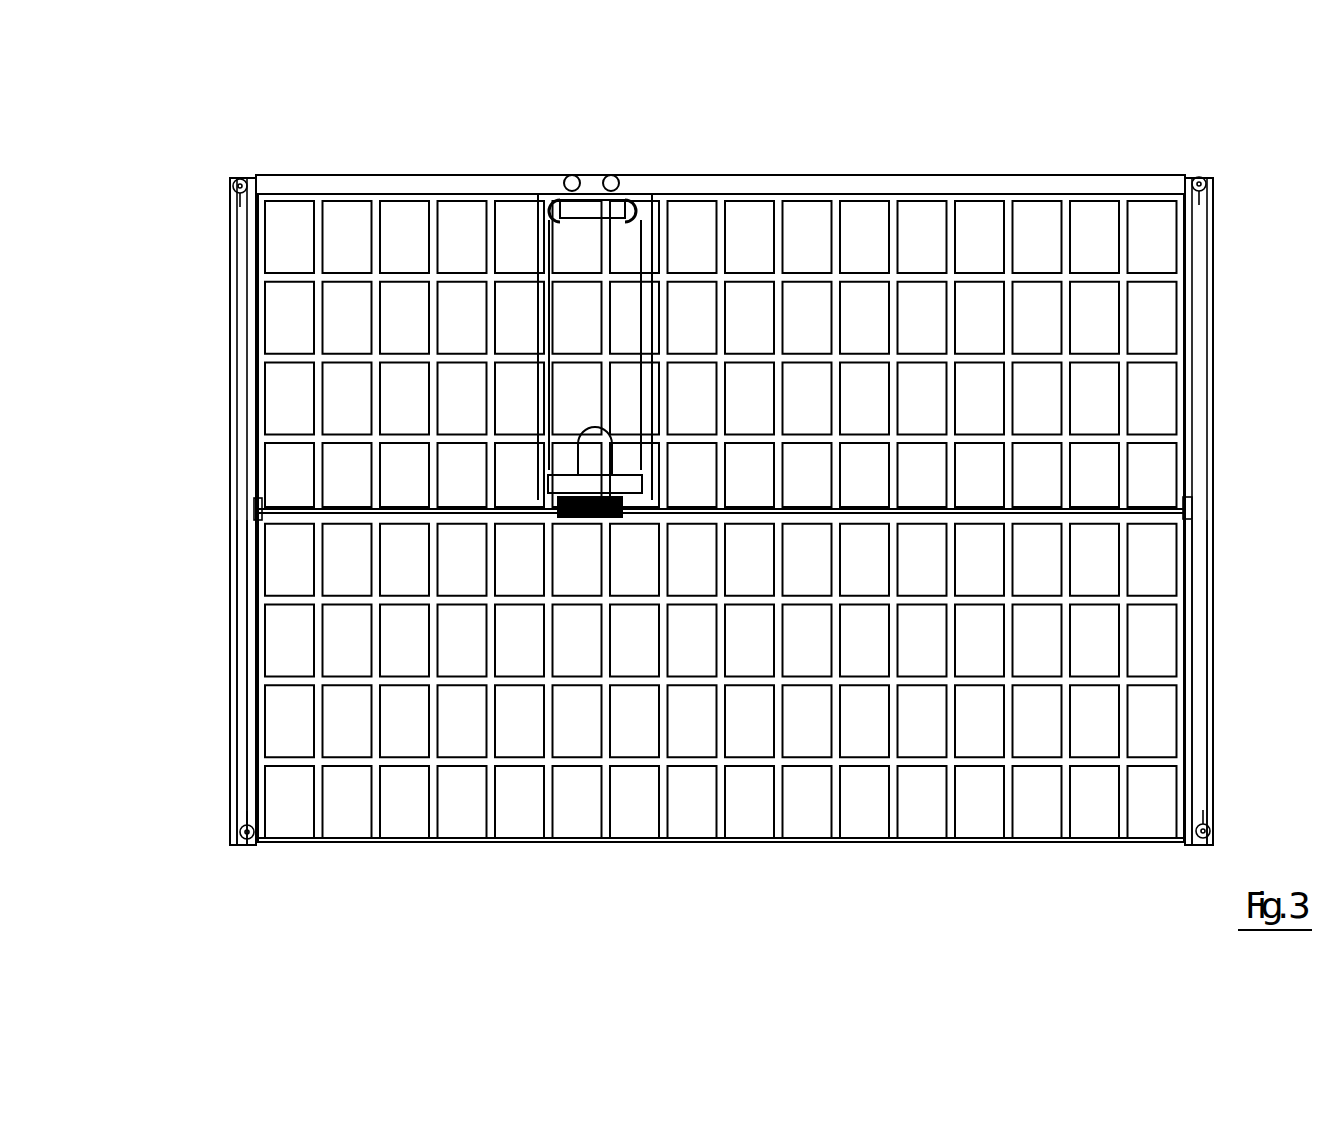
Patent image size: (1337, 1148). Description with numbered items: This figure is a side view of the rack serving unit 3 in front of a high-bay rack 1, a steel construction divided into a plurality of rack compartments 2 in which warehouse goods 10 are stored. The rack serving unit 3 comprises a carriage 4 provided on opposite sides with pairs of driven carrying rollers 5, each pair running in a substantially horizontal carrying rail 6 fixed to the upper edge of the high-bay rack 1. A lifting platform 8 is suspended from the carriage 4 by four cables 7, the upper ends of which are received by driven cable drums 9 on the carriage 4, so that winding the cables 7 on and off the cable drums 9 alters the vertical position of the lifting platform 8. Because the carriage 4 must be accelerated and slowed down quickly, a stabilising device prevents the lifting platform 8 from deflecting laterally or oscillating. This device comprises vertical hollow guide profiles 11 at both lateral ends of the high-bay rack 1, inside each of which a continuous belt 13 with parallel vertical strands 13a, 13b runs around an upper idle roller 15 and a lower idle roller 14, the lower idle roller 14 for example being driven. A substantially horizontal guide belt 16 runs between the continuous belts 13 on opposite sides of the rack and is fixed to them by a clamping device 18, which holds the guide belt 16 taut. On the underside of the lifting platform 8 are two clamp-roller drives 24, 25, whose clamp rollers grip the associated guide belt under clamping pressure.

The high-bay rack 1 is at (720, 498).
The rack compartments 2 is at (850, 222).
The rack serving unit 3 is at (605, 285).
The carriage 4 is at (597, 205).
The carrying rollers 5 is at (570, 176).
The carrying rail 6 is at (1130, 178).
The cables 7 is at (655, 322).
The lifting platform 8 is at (548, 488).
The cable drums 9 is at (540, 200).
The warehouse goods 10 is at (585, 452).
The guide profiles 11 is at (232, 210).
The continuous belt 13 is at (232, 282).
The vertical strand 13a is at (232, 627).
The vertical strand 13b is at (250, 742).
The lower idle roller 14 is at (250, 845).
The upper idle roller 15 is at (240, 180).
The guide belt 16 is at (1100, 510).
The clamping device 18 is at (256, 505).
The clamp-roller drive 24 is at (590, 520).
The clamp-roller drive 25 is at (590, 528).